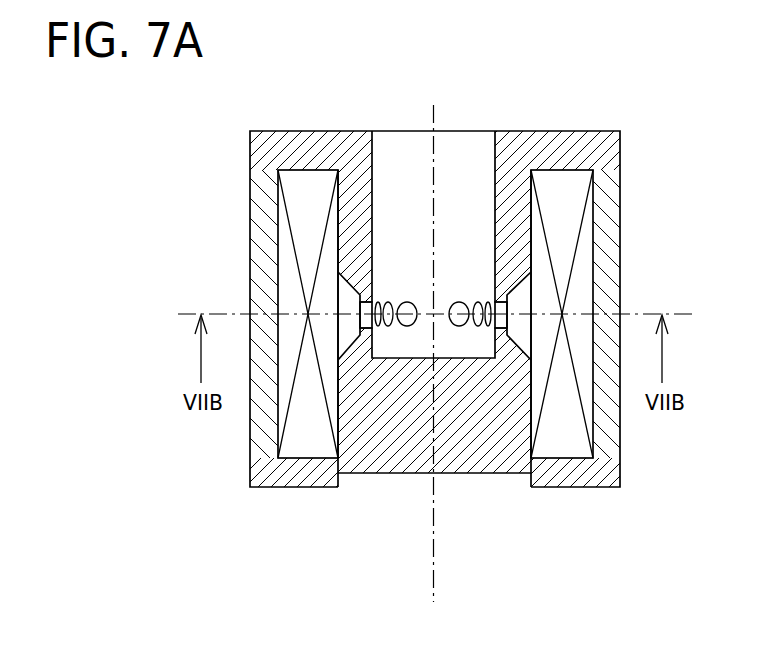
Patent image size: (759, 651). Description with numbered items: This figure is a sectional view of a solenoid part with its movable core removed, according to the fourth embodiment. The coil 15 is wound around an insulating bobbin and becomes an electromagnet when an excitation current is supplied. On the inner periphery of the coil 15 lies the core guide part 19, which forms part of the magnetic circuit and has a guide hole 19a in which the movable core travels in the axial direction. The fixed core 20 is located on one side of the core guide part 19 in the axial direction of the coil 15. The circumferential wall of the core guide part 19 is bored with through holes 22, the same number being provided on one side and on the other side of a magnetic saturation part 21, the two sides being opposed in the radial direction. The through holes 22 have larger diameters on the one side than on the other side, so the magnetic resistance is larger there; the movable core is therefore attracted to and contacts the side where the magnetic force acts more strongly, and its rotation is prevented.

The coil 15 is at (557, 243).
The core guide part 19 is at (515, 207).
The guide hole 19a is at (420, 190).
The fixed core 20 is at (445, 425).
The magnetic saturation part 21 is at (508, 294).
The through hole 22 is at (407, 316).